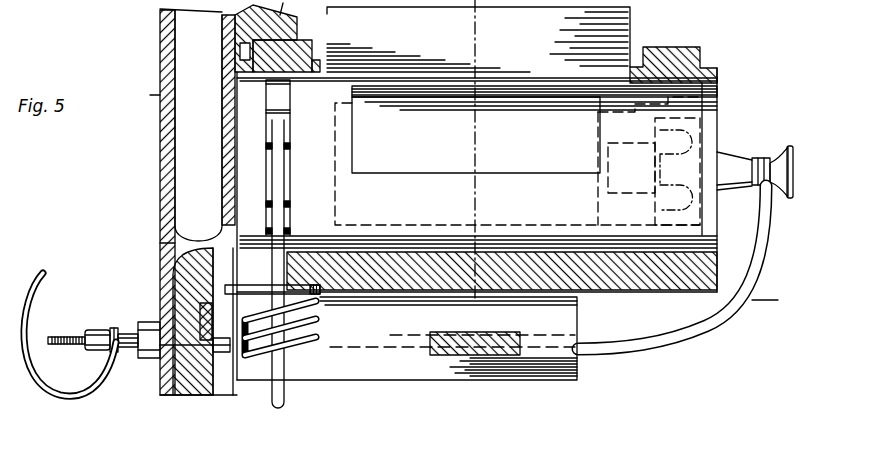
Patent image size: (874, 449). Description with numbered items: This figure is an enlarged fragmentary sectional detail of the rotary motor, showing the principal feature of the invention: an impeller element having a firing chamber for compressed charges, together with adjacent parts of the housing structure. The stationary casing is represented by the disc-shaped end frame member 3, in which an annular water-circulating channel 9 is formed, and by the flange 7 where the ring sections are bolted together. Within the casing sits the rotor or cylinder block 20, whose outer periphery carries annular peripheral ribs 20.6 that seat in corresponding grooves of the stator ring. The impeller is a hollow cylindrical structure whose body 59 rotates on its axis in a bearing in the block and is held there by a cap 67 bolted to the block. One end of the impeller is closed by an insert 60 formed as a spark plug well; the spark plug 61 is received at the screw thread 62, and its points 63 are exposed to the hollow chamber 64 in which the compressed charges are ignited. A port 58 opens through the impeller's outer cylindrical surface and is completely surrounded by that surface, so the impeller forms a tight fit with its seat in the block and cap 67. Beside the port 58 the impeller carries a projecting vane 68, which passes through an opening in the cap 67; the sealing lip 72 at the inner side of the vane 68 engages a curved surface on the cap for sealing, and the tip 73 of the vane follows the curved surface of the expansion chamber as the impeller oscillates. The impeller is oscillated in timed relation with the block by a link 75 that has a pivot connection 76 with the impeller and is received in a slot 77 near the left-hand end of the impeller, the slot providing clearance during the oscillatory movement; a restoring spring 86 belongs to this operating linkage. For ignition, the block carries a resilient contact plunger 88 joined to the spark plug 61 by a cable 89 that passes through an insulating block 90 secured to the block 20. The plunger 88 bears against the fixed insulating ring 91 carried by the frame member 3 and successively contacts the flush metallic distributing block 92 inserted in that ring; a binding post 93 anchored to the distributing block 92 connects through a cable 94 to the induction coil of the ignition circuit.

The end frame member 3 is at (162, 244).
The flange 7 is at (724, 173).
The annular water-circulating channel 9 is at (197, 202).
The cylindrical block 20 is at (625, 296).
The annular peripheral rib 20.6 is at (313, 58).
The port 58 is at (412, 173).
The impeller cylinder body 59 is at (467, 150).
The insert 60 is at (598, 125).
The spark plug 61 is at (738, 158).
The screw thread 62 is at (640, 200).
The spark plug points 63 is at (600, 173).
The hollow chamber 64 is at (340, 215).
The cap 67 is at (718, 71).
The vane 68 is at (586, 26).
The sealing lip 72 is at (457, 86).
The vane tip 73 is at (365, 12).
The link 75 is at (282, 402).
The pivot connection 76 is at (284, 147).
The slot 77 is at (280, 97).
The restoring spring 86 is at (300, 323).
The resilient contact plunger 88 is at (226, 396).
The cable 89 is at (624, 354).
The insulating block 90 is at (527, 382).
The insulating ring 91 is at (180, 397).
The distributing block 92 is at (160, 385).
The binding post 93 is at (55, 344).
The cable 94 is at (46, 299).